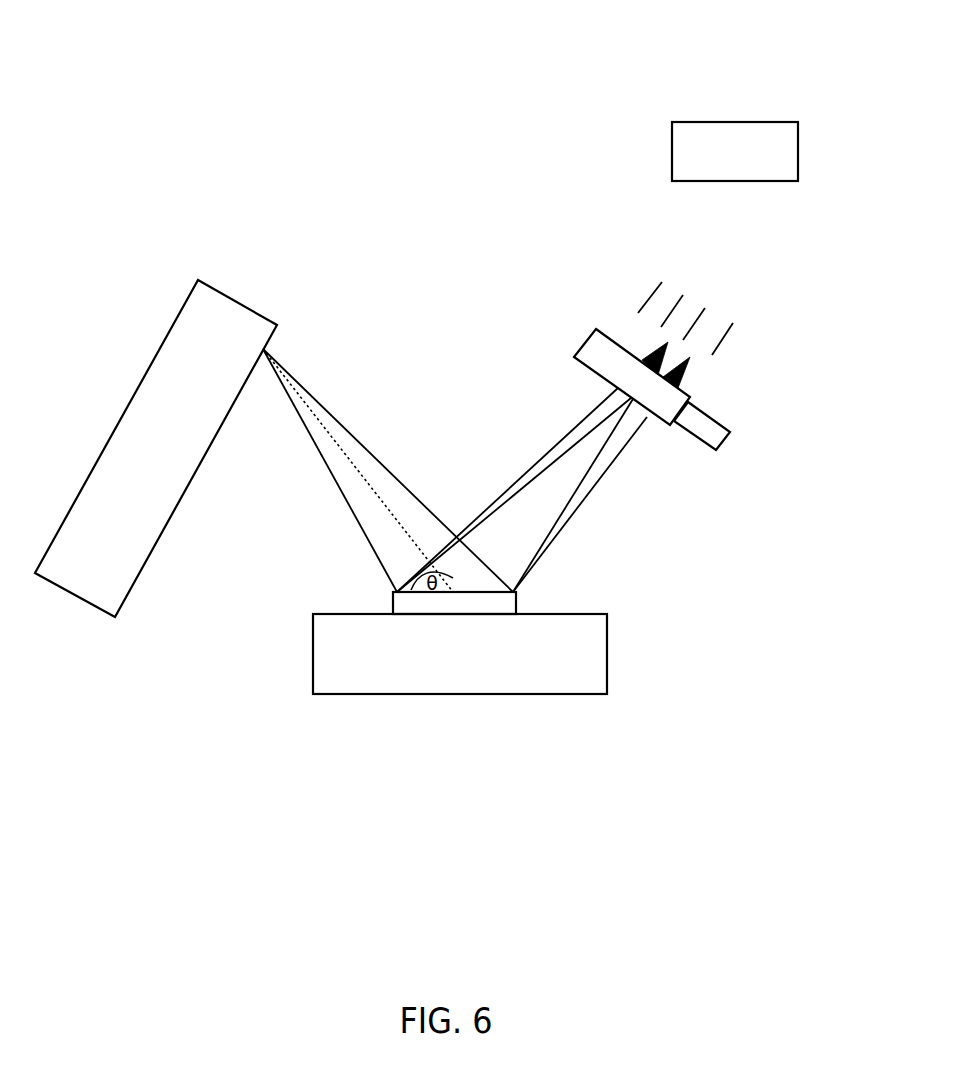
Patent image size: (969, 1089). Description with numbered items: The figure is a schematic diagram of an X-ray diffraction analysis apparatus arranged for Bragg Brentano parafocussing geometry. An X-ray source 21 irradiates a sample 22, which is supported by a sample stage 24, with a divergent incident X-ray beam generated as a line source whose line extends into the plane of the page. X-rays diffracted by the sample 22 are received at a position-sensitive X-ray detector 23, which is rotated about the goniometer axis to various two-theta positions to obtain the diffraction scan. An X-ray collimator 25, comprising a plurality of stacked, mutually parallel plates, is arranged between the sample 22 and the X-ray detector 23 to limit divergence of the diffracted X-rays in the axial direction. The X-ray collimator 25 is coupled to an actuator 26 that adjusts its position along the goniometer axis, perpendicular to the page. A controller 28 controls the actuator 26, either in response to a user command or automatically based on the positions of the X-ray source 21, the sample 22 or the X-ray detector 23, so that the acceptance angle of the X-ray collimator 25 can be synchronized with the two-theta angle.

The X-ray source 21 is at (182, 310).
The sample 22 is at (516, 605).
The X-ray detector 23 is at (638, 262).
The sample stage 24 is at (607, 678).
The X-ray collimator 25 is at (582, 347).
The actuator 26 is at (724, 442).
The controller 28 is at (735, 122).